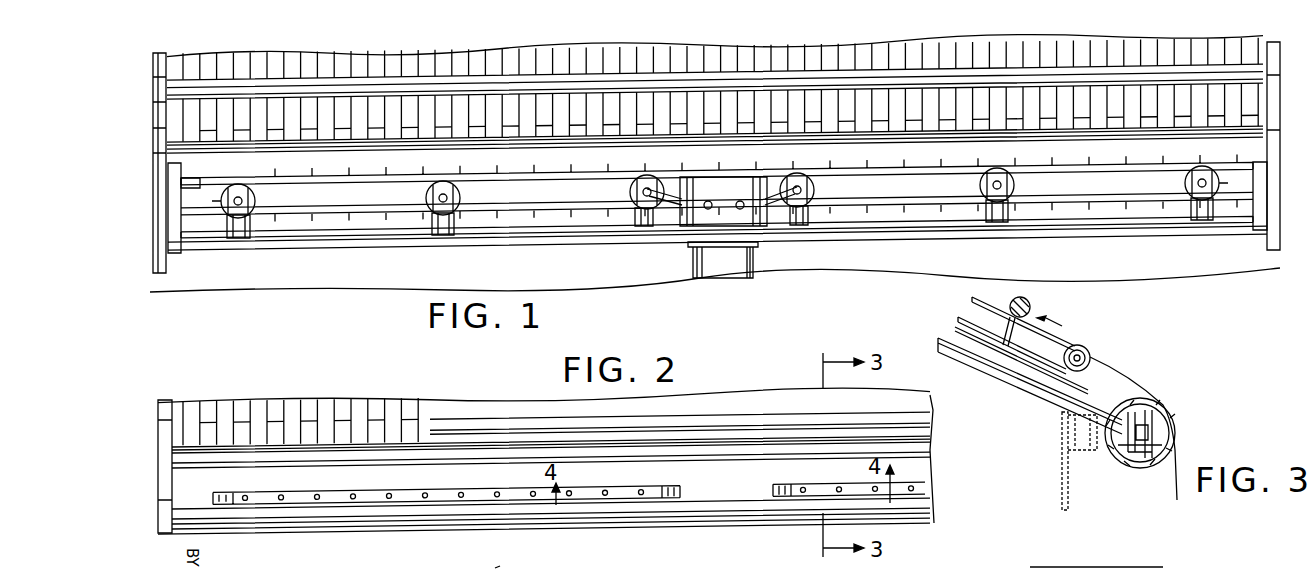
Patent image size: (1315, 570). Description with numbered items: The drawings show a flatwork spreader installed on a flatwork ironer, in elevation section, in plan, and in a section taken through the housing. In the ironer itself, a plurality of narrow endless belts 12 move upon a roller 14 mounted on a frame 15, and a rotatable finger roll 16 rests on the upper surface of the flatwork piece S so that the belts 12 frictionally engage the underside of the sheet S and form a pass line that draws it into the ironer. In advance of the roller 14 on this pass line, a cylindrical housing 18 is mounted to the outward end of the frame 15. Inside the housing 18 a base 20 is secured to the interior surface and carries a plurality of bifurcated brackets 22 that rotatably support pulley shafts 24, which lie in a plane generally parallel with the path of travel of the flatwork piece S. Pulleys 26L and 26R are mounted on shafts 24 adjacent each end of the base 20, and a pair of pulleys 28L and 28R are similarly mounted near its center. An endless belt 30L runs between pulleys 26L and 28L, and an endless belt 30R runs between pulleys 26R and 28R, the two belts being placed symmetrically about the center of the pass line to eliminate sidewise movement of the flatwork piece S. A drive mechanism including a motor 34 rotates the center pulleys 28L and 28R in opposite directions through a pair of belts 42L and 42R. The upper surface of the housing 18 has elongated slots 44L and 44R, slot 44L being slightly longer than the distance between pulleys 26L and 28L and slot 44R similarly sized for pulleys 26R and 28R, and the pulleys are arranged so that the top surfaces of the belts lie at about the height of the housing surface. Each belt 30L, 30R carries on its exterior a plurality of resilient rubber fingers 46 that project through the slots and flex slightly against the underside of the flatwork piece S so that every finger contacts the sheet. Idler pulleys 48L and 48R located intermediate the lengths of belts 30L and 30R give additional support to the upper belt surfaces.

In FIG. 1, the endless belts 12 is at (1182, 47).
In FIG. 2, the endless belts 12 is at (544, 420).
In FIG. 3, the endless belts 12 is at (1058, 337).
In FIG. 1, the roller 14 is at (1276, 142).
In FIG. 3, the roller 14 is at (1090, 352).
In FIG. 1, the frame 15 is at (1272, 215).
In FIG. 3, the frame 15 is at (1043, 400).
In FIG. 1, the finger roll 16 is at (1014, 72).
In FIG. 2, the finger roll 16 is at (551, 460).
In FIG. 3, the finger roll 16 is at (1028, 302).
In FIG. 1, the cylindrical housing 18 is at (1238, 161).
In FIG. 2, the cylindrical housing 18 is at (285, 533).
In FIG. 3, the cylindrical housing 18 is at (1160, 470).
In FIG. 1, the base 20 is at (1112, 225).
In FIG. 2, the base 20 is at (439, 507).
In FIG. 3, the base 20 is at (1133, 476).
In FIG. 1, the bifurcated brackets 22 is at (250, 229).
In FIG. 3, the bifurcated brackets 22 is at (1170, 445).
In FIG. 3, the pulley shafts 24 is at (1160, 410).
In FIG. 1, the left end pulley 26L is at (256, 195).
In FIG. 1, the right end pulley 26R is at (1185, 185).
In FIG. 3, the right end pulley 26R is at (1125, 462).
In FIG. 1, the left center pulley 28L is at (631, 193).
In FIG. 1, the right center pulley 28R is at (814, 190).
In FIG. 1, the left endless belt 30L is at (401, 186).
In FIG. 2, the left endless belt 30L is at (343, 500).
In FIG. 1, the right endless belt 30R is at (1098, 178).
In FIG. 2, the right endless belt 30R is at (903, 490).
In FIG. 1, the motor 34 is at (718, 280).
In FIG. 1, the left drive belt 42L is at (654, 227).
In FIG. 1, the right drive belt 42R is at (779, 226).
In FIG. 1, the left elongated slot 44L is at (188, 182).
In FIG. 2, the left elongated slot 44L is at (673, 503).
In FIG. 1, the right elongated slot 44R is at (782, 169).
In FIG. 2, the right elongated slot 44R is at (783, 503).
In FIG. 1, the resilient fingers 46 is at (533, 224).
In FIG. 2, the resilient fingers 46 is at (499, 559).
In FIG. 3, the resilient fingers 46 is at (1052, 566).
In FIG. 1, the left idler pulley 48L is at (461, 197).
In FIG. 1, the right idler pulley 48R is at (981, 188).
In FIG. 3, the flatwork piece S is at (1125, 372).